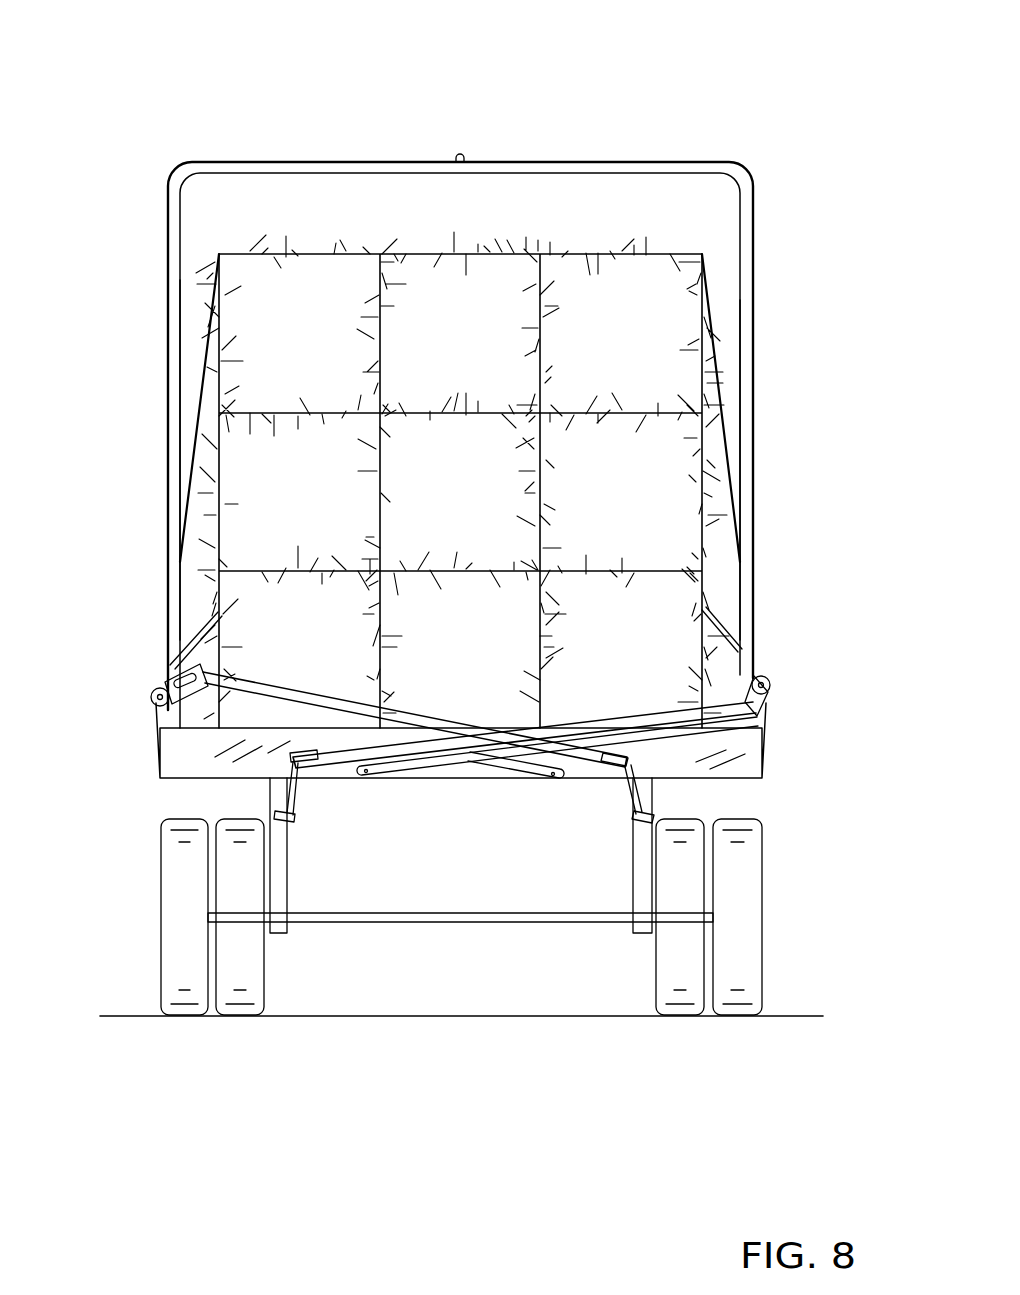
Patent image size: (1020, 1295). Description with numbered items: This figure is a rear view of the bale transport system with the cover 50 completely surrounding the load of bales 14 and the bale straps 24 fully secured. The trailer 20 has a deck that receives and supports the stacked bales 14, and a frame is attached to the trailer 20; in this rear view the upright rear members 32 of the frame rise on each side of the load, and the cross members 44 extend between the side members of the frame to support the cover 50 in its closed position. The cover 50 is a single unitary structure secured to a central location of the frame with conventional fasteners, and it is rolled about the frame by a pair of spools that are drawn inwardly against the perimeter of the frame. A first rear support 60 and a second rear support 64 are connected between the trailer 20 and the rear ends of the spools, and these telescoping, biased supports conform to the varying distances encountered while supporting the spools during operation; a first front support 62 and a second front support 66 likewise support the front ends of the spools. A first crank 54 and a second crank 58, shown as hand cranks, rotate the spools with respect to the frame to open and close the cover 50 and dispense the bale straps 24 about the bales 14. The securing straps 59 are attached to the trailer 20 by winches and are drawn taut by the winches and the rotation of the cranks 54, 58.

The bales 14 is at (613, 310).
The trailer 20 is at (708, 781).
The bale straps 24 is at (722, 412).
The rear members 32 is at (176, 281).
The cross members 44 is at (667, 172).
The cover 50 is at (377, 162).
The first crank 54 is at (327, 760).
The second crank 58 is at (588, 766).
The securing straps 59 is at (140, 718).
The first rear support 60 is at (381, 763).
The first front support 62 is at (712, 632).
The second rear support 64 is at (526, 772).
The second front support 66 is at (202, 647).